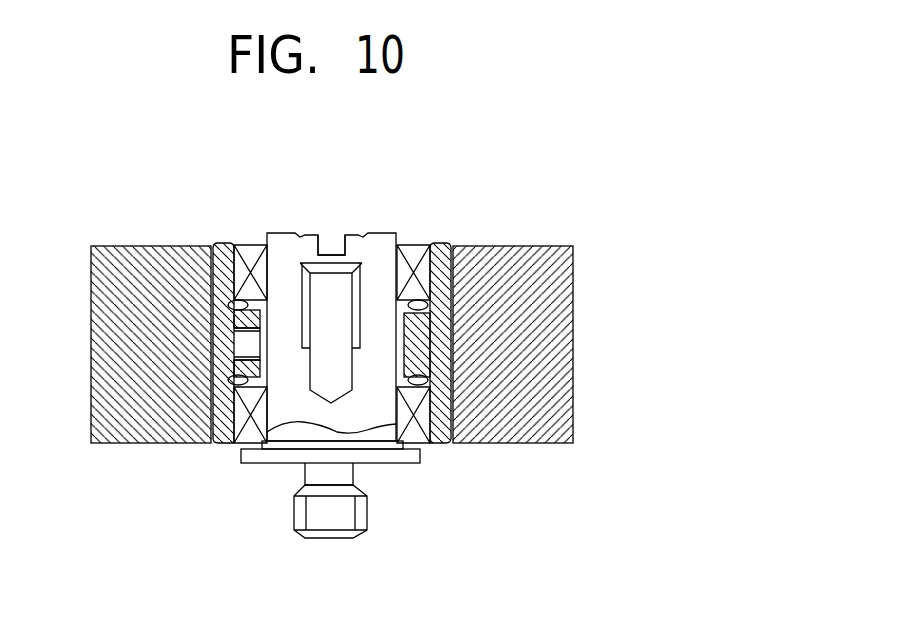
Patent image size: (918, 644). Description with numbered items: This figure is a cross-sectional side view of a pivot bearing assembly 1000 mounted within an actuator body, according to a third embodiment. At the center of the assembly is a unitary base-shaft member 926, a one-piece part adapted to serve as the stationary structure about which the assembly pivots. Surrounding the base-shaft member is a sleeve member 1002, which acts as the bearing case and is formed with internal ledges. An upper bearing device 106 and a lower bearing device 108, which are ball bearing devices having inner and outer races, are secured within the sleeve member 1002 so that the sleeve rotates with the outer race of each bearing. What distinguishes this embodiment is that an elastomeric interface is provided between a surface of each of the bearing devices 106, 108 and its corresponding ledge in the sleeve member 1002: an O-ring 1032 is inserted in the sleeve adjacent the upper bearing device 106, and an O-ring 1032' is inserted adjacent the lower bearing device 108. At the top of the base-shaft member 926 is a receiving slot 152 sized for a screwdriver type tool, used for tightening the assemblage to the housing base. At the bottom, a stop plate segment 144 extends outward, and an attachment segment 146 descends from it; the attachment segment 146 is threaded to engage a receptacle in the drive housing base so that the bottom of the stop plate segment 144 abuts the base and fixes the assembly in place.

The upper bearing device 106 is at (253, 250).
The lower bearing device 108 is at (253, 427).
The stop plate segment 144 is at (402, 458).
The attachment segment 146 is at (344, 518).
The receiving slot 152 is at (332, 242).
The unitary base-shaft member 926 is at (288, 246).
The pivot bearing assembly 1000 is at (462, 205).
The sleeve member 1002 is at (432, 345).
The O-ring 1032 is at (460, 246).
The O-ring 1032' is at (500, 405).